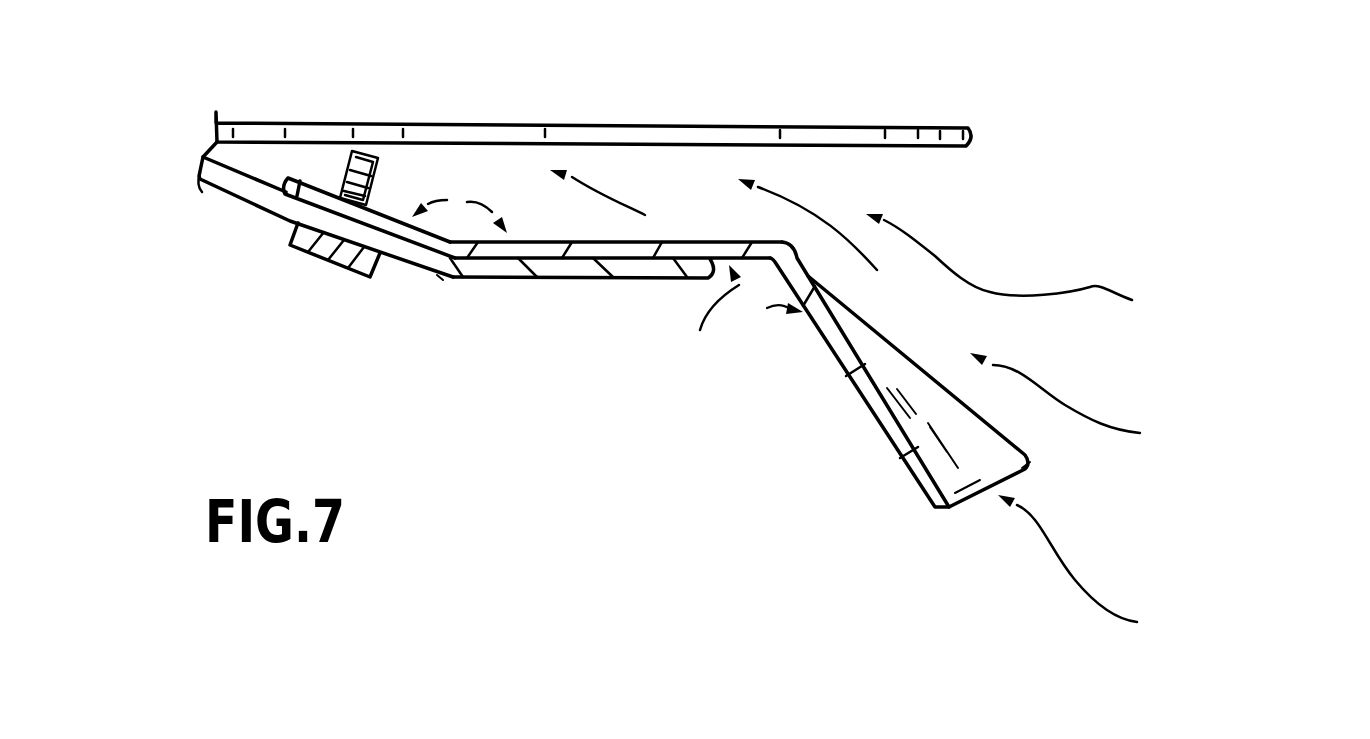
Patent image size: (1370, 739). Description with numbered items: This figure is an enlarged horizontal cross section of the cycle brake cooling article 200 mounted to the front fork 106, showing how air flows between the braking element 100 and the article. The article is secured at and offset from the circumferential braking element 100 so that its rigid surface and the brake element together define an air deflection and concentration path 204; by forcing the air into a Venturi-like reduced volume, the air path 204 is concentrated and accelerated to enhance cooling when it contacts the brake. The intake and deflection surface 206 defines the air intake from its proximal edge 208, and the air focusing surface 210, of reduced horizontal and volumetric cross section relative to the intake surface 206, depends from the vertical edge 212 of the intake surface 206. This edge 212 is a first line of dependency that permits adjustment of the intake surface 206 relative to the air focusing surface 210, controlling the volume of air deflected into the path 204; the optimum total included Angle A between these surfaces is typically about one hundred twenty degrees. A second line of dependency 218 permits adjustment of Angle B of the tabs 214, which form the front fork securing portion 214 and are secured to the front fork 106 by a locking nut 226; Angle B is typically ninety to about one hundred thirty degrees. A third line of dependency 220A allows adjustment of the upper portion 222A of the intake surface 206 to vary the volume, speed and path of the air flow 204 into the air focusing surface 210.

The cycle brake cooling article 200 is at (146, 332).
The circumferential braking element 100 is at (637, 125).
The second line of dependency 218 is at (447, 242).
The front fork securing portion 214 is at (373, 215).
The locking nut 226 is at (323, 258).
The front fork 106 is at (437, 278).
The air focusing surface 210 is at (628, 278).
The vertical edge / first line of dependency 212 is at (772, 260).
The intake and deflection surface 206 is at (987, 432).
The third line of dependency 220A is at (918, 391).
The proximal edge 208 is at (1033, 467).
The upper portion of the intake surface 222A is at (972, 483).
The air deflection and concentration path 204 is at (1044, 270).
The Angle A is at (701, 316).
The Angle B is at (492, 205).